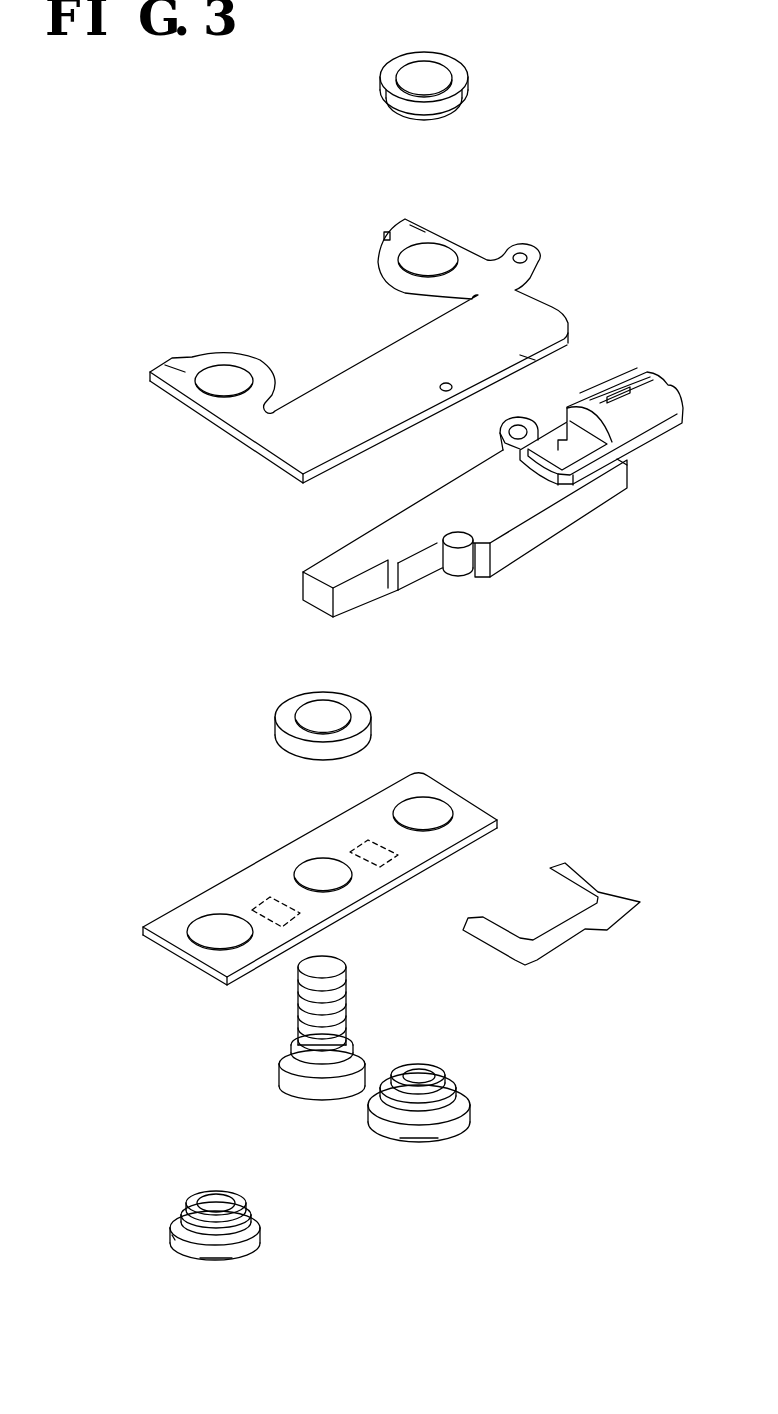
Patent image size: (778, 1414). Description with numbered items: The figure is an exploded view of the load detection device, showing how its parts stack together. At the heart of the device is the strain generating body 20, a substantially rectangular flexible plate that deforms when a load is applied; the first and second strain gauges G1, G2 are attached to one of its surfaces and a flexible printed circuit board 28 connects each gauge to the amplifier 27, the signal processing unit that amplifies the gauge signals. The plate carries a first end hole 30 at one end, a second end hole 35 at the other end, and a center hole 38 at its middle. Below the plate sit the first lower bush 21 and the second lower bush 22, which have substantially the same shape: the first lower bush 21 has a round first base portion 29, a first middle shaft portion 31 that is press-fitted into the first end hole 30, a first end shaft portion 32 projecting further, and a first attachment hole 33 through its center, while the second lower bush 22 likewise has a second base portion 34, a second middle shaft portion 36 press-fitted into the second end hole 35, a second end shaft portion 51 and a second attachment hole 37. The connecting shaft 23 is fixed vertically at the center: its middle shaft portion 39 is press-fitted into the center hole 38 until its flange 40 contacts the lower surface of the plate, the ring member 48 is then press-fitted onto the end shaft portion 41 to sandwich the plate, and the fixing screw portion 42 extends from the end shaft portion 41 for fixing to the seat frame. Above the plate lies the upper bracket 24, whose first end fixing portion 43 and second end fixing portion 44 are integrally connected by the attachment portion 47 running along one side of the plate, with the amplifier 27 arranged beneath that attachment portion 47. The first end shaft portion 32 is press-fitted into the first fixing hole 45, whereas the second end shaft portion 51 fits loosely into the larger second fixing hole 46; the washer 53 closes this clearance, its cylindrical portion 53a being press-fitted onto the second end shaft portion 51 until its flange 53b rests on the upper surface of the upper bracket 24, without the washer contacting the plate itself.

The washer 53 is at (468, 68).
The cylindrical portion 53a is at (437, 115).
The flange 53b is at (407, 107).
The upper bracket 24 is at (550, 306).
The first end fixing portion 43 is at (178, 372).
The second end fixing portion 44 is at (418, 220).
The first fixing hole 45 is at (218, 378).
The second fixing hole 46 is at (433, 258).
The attachment portion 47 is at (530, 348).
The amplifier 27 is at (607, 490).
The ring member 48 is at (295, 702).
The strain generating body 20 is at (487, 820).
The first end hole 30 is at (213, 928).
The center hole 38 is at (333, 883).
The second end hole 35 is at (430, 810).
The first strain gauge G1 is at (263, 900).
The second strain gauge G2 is at (363, 847).
The flexible printed circuit board 28 is at (602, 890).
The connecting shaft 23 is at (276, 1075).
The fixing screw portion 42 is at (305, 1003).
The end shaft portion 41 is at (297, 1055).
The flange 40 is at (328, 1097).
The middle shaft portion 39 is at (305, 1080).
The second lower bush 22 is at (449, 1133).
The second base portion 34 is at (422, 1138).
The second middle shaft portion 36 is at (407, 1115).
The second attachment hole 37 is at (420, 1075).
The second end shaft portion 51 is at (432, 1095).
The first lower bush 21 is at (221, 1258).
The first base portion 29 is at (177, 1248).
The first middle shaft portion 31 is at (243, 1240).
The first end shaft portion 32 is at (205, 1225).
The first attachment hole 33 is at (210, 1200).